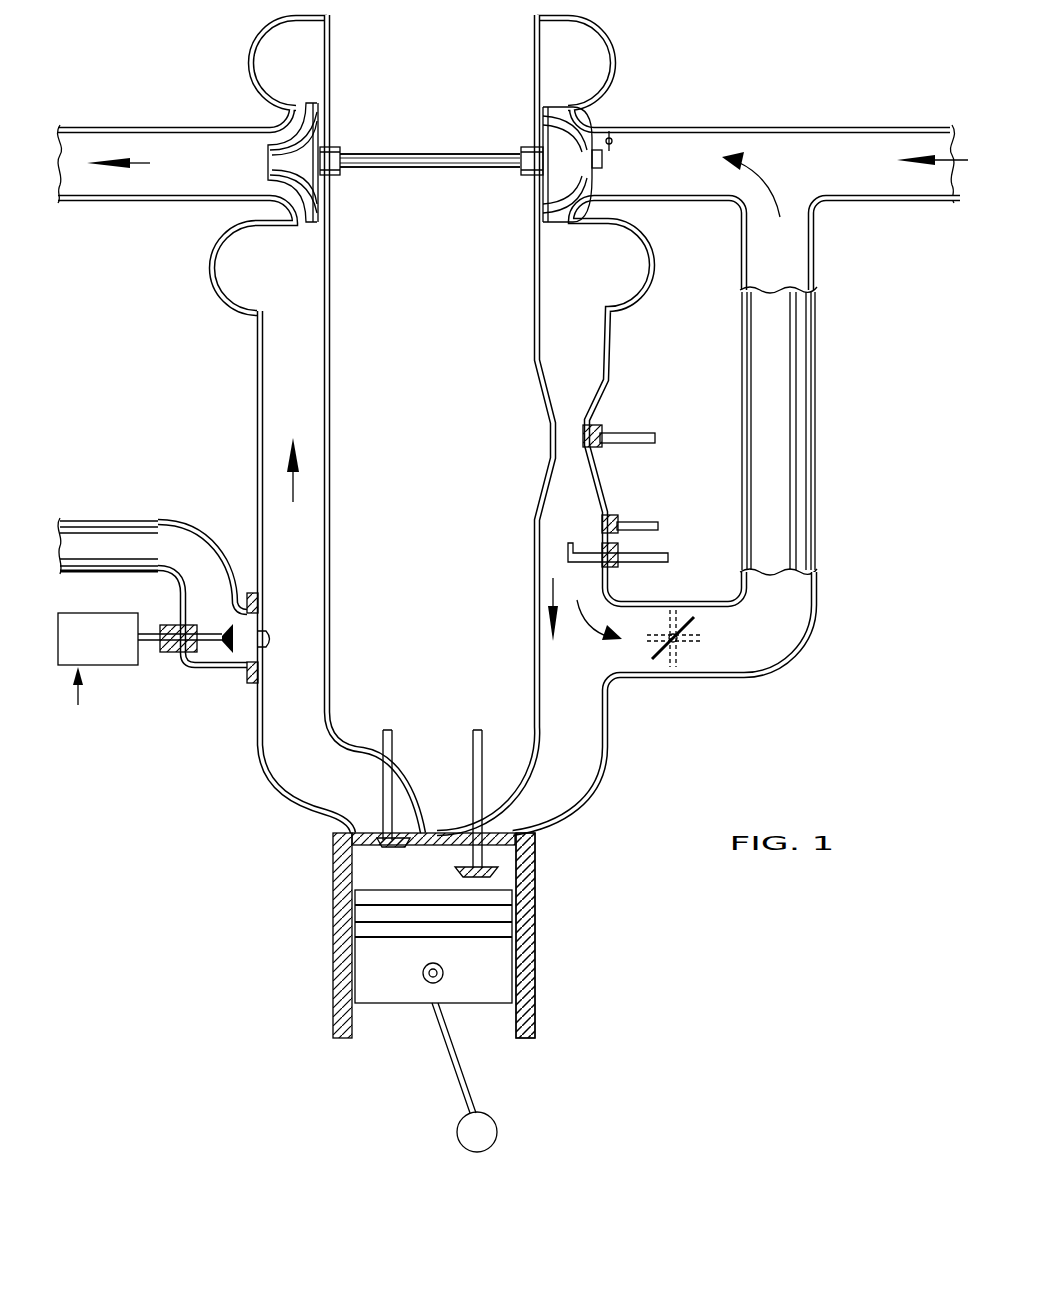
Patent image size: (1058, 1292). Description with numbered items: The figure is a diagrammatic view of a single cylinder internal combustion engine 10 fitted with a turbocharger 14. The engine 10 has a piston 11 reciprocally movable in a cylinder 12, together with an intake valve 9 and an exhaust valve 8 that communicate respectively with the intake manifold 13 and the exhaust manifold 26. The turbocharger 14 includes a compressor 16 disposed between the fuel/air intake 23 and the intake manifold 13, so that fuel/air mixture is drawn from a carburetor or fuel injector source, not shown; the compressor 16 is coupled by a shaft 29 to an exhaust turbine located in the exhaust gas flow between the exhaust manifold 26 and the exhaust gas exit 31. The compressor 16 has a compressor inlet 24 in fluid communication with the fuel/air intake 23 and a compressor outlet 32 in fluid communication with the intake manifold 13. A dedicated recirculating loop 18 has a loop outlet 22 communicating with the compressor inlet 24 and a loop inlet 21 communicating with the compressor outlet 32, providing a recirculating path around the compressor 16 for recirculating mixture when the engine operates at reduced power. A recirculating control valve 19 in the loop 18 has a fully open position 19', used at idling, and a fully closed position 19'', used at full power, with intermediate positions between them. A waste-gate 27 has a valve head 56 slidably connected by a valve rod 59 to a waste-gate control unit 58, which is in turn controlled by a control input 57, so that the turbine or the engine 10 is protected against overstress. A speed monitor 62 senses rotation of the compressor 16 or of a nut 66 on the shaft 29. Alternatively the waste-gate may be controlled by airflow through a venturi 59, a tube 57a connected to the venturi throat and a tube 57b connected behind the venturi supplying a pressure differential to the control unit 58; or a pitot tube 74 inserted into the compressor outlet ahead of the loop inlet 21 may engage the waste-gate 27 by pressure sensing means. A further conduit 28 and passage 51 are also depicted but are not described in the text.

The exhaust valve 8 is at (388, 846).
The intake valve 9 is at (466, 866).
The internal combustion engine 10 is at (568, 917).
The piston 11 is at (403, 993).
The cylinder 12 is at (535, 995).
The intake manifold 13 is at (588, 737).
The turbocharger 14 is at (449, 147).
The compressor 16 is at (557, 177).
The recirculating loop 18 is at (795, 604).
The recirculating control valve 19 is at (652, 641).
The fully open position 19' is at (706, 637).
The fully closed position 19'' is at (692, 650).
The loop inlet 21 is at (584, 679).
The loop outlet 22 is at (756, 231).
The fuel/air intake 23 is at (941, 142).
The compressor inlet 24 is at (698, 143).
The exhaust manifold 26 is at (267, 763).
The waste-gate 27 is at (270, 637).
The exhaust gas recirculation conduit 28 is at (180, 537).
The shaft 29 is at (423, 170).
The exhaust gas exit 31 is at (216, 175).
The compressor outlet 32 is at (547, 313).
The exhaust passage 51 is at (317, 581).
The valve head 56 is at (223, 628).
The control input 57 is at (78, 686).
The tube 57a is at (629, 437).
The tube 57b is at (637, 525).
The waste-gate control unit 58 is at (82, 613).
The valve rod 59 is at (148, 645).
The speed monitor 62 is at (612, 140).
The nut 66 is at (603, 165).
The pitot tube 74 is at (659, 560).